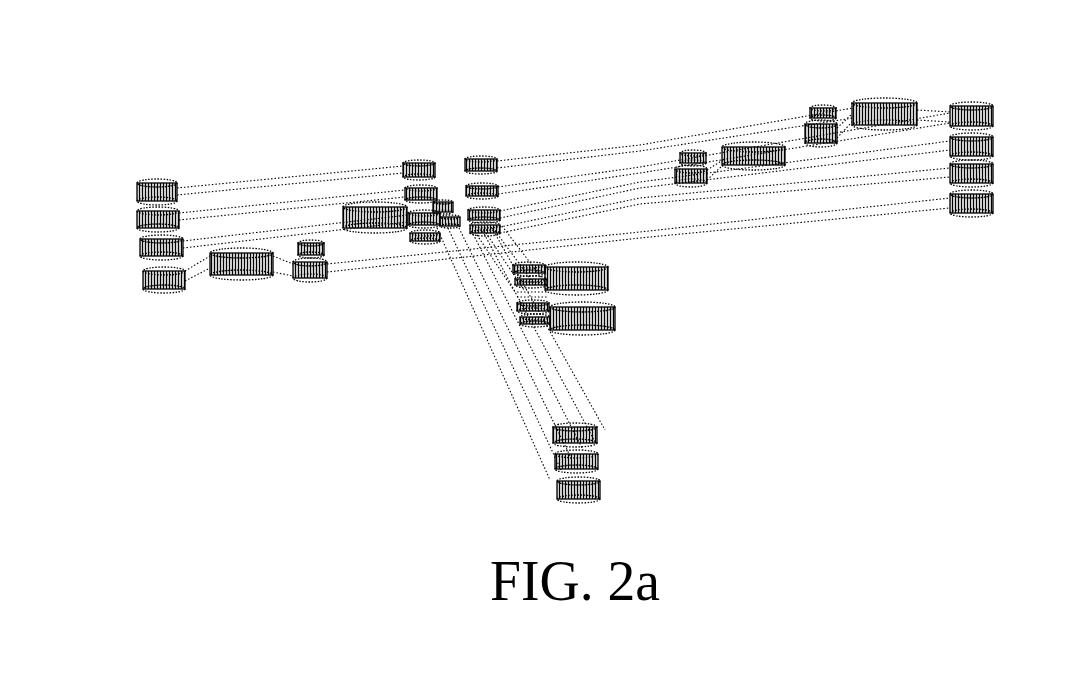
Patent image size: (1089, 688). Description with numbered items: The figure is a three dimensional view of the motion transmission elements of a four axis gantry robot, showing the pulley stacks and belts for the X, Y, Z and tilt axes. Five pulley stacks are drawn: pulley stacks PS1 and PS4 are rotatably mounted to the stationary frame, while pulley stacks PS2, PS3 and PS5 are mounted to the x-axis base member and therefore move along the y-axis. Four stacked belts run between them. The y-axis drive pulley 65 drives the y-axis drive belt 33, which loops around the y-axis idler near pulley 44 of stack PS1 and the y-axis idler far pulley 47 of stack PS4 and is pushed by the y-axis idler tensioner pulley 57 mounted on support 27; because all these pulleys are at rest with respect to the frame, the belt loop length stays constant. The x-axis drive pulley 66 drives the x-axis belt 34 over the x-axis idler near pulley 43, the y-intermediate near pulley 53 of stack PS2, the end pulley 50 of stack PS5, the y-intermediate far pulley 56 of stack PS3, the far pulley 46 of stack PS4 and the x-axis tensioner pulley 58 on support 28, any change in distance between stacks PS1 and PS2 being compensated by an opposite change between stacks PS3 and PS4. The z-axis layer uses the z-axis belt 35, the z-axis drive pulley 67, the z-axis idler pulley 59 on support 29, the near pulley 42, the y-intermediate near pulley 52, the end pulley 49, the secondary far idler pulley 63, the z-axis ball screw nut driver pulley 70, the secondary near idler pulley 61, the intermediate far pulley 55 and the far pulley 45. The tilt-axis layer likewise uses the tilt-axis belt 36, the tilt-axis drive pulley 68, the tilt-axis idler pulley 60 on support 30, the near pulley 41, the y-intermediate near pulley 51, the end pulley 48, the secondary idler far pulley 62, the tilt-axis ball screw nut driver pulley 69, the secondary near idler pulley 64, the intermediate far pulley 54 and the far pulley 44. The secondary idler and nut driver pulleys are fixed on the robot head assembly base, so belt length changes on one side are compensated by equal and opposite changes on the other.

The support 27 is at (305, 272).
The support 28 is at (446, 198).
The support 29 is at (692, 148).
The support 30 is at (822, 105).
The y-axis drive belt 33 is at (195, 282).
The x-axis belt 34 is at (308, 215).
The z-axis belt 35 is at (250, 198).
The tilt-axis belt 36 is at (195, 183).
The tilt-axis idler near pulley 41 is at (137, 188).
The z-axis idler near pulley 42 is at (140, 215).
The x-axis idler near pulley 43 is at (143, 257).
The y-axis idler near pulley 44 is at (145, 288).
The z-axis idler far pulley 45 is at (992, 140).
The x-axis idler far pulley 46 is at (993, 172).
The y-axis idler far pulley 47 is at (998, 206).
The tilt-axis idler end pulley 48 is at (596, 435).
The z-axis idler end pulley 49 is at (598, 462).
The x-axis idler end pulley 50 is at (600, 488).
The tilt-axis idler y-intermediate near pulley 51 is at (412, 165).
The z-axis idler y-intermediate near pulley 52 is at (412, 212).
The x-axis idler y-intermediate near pulley 53 is at (420, 243).
The tilt-axis idler intermediate far pulley 54 is at (490, 170).
The z-axis idler intermediate far pulley 55 is at (497, 197).
The x-axis idler y-intermediate far pulley 56 is at (501, 222).
The y-axis idler tensioner pulley 57 is at (297, 276).
The x-axis tensioner pulley 58 is at (455, 218).
The z-axis idler pulley 59 is at (673, 170).
The tilt-axis idler pulley 60 is at (810, 130).
The z-axis secondary near idler pulley 61 is at (517, 313).
The tilt-axis secondary idler far pulley 62 is at (540, 262).
The z-axis secondary far idler pulley 63 is at (537, 322).
The tilt-axis secondary near idler pulley 64 is at (540, 298).
The y-axis drive pulley 65 is at (233, 273).
The x-axis drive pulley 66 is at (372, 235).
The z-axis drive pulley 67 is at (730, 150).
The tilt-axis drive pulley 68 is at (855, 108).
The tilt-axis ball screw nut driver pulley 69 is at (612, 317).
The z-axis ball screw nut driver pulley 70 is at (607, 278).
The pulley stack PS1 is at (140, 170).
The pulley stack PS2 is at (420, 153).
The pulley stack PS3 is at (478, 150).
The pulley stack PS4 is at (983, 226).
The pulley stack PS5 is at (540, 473).